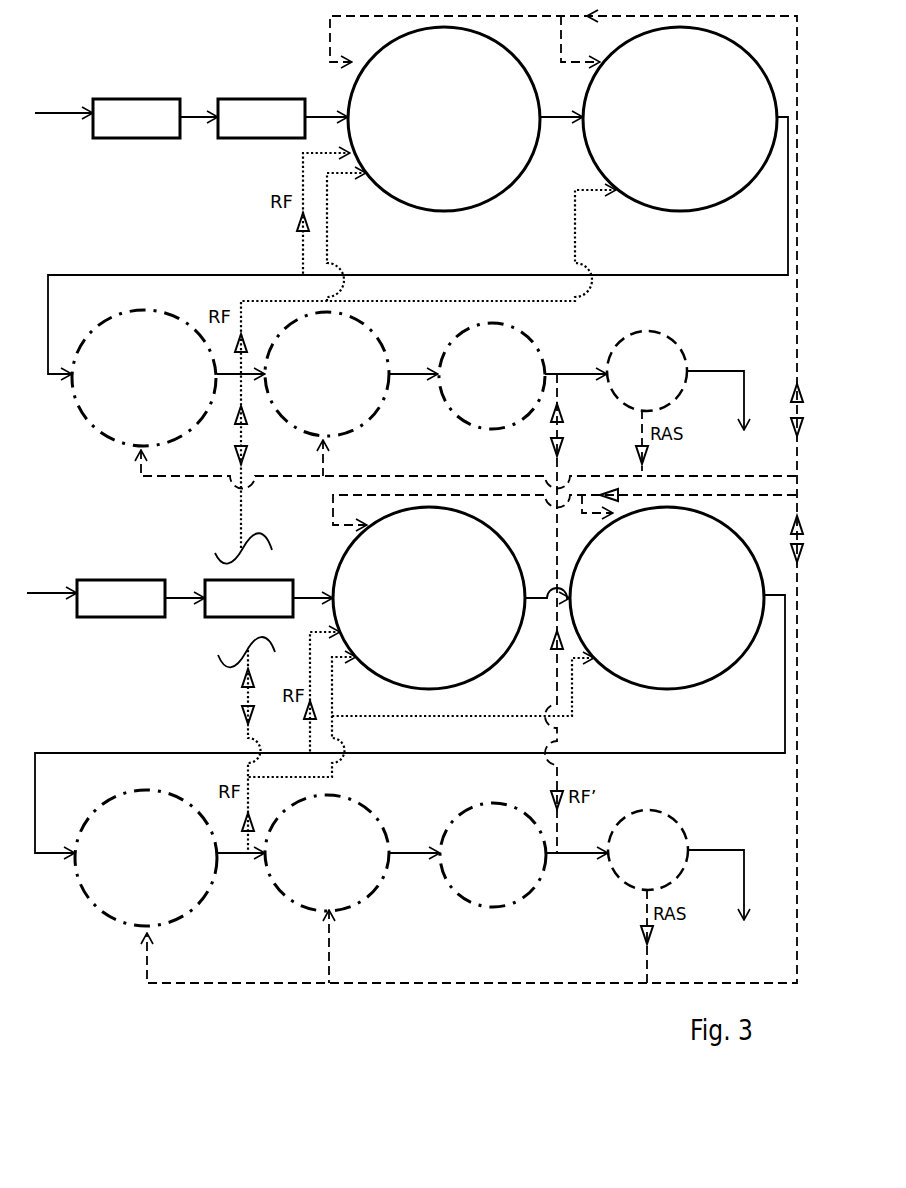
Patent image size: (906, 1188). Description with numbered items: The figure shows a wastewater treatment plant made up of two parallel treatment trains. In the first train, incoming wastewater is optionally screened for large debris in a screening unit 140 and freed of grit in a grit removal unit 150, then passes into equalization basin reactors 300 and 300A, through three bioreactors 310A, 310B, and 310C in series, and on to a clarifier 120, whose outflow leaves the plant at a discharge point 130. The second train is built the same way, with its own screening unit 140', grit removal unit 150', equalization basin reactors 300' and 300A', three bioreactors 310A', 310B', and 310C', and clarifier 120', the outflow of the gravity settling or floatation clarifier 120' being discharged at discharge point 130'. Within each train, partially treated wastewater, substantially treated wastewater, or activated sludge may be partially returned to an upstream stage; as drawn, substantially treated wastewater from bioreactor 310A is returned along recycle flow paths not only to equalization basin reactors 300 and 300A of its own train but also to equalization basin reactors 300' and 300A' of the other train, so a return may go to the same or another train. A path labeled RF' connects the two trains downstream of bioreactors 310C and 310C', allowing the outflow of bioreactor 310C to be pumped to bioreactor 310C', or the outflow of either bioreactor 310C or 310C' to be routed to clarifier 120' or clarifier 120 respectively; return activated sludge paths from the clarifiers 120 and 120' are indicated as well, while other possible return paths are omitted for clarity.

The screening unit 140 is at (136, 118).
The grit removal unit 150 is at (261, 118).
The equalization basin reactor 300 is at (444, 119).
The equalization basin reactor 300A is at (680, 119).
The bioreactor 310A is at (144, 378).
The bioreactor 310B is at (327, 374).
The bioreactor 310C is at (492, 376).
The clarifier 120 is at (647, 371).
The discharge point 130 is at (723, 417).
The screening unit 140' is at (121, 598).
The grit removal unit 150' is at (249, 598).
The equalization basin reactor 300' is at (429, 598).
The equalization basin reactor 300A' is at (667, 598).
The bioreactor 310A' is at (146, 858).
The bioreactor 310B' is at (327, 853).
The bioreactor 310C' is at (493, 855).
The clarifier 120' is at (648, 850).
The discharge point 130' is at (725, 904).